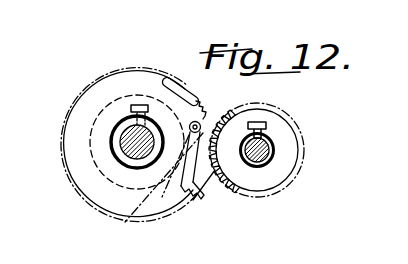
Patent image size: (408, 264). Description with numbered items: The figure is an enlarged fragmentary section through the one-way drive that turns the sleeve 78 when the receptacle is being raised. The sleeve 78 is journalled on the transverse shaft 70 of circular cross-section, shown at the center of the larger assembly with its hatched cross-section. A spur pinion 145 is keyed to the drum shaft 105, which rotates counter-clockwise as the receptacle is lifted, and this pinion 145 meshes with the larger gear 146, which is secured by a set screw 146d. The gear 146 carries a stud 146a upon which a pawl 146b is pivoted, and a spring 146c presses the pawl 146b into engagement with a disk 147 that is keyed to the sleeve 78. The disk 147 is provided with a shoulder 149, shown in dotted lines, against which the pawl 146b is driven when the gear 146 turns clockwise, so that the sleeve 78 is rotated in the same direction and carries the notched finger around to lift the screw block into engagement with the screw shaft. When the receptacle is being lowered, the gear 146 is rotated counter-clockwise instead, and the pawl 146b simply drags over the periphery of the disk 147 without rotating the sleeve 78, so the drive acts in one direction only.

The shaft 70 is at (127, 143).
The sleeve 78 is at (125, 163).
The drum shaft 105 is at (270, 148).
The spur pinion 145 is at (277, 190).
The gear 146 is at (173, 84).
The stud 146a is at (200, 123).
The pawl 146b is at (184, 160).
The spring 146c is at (207, 186).
The set screw 146d is at (133, 107).
The disk 147 is at (96, 118).
The shoulder 149 is at (128, 220).